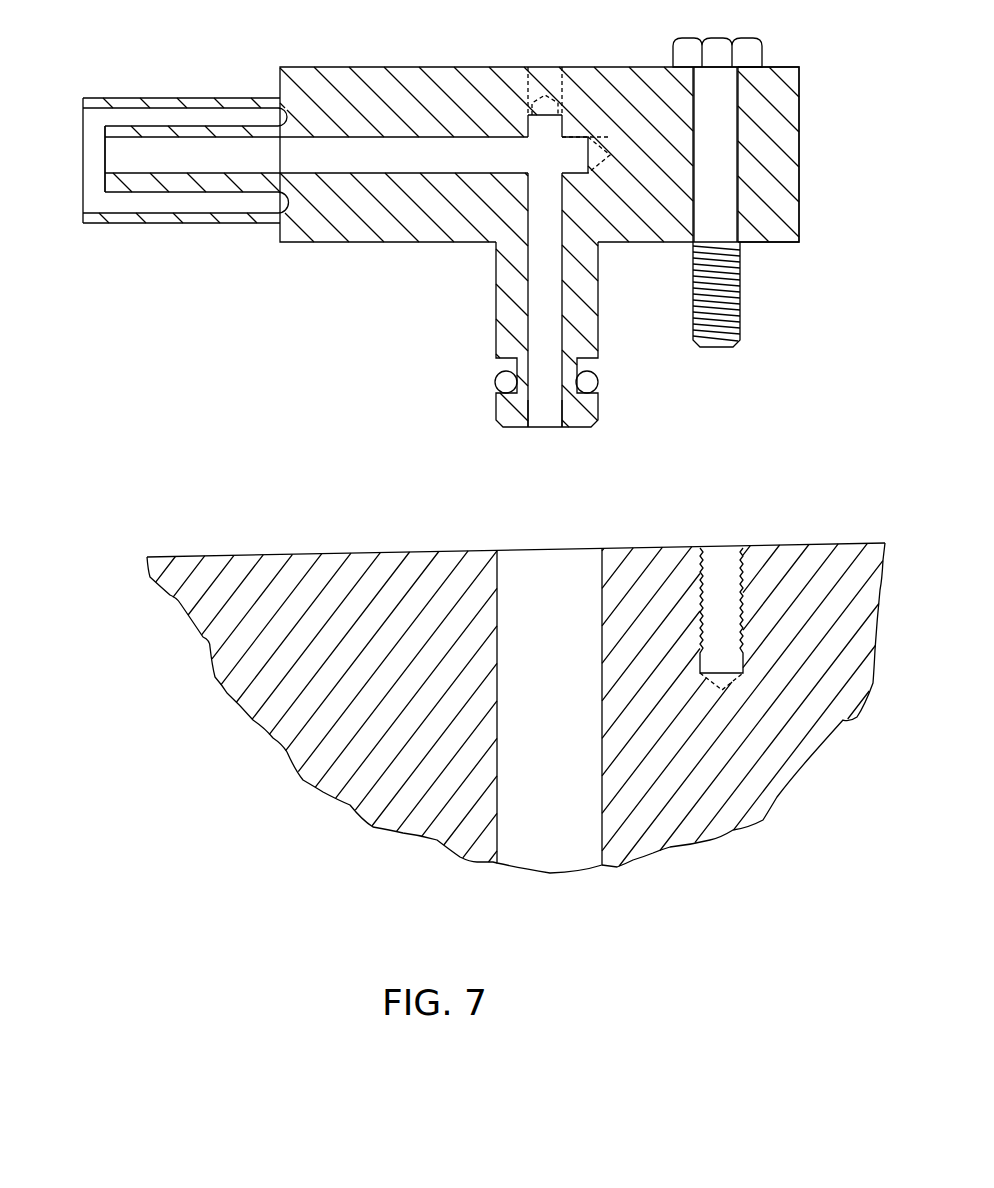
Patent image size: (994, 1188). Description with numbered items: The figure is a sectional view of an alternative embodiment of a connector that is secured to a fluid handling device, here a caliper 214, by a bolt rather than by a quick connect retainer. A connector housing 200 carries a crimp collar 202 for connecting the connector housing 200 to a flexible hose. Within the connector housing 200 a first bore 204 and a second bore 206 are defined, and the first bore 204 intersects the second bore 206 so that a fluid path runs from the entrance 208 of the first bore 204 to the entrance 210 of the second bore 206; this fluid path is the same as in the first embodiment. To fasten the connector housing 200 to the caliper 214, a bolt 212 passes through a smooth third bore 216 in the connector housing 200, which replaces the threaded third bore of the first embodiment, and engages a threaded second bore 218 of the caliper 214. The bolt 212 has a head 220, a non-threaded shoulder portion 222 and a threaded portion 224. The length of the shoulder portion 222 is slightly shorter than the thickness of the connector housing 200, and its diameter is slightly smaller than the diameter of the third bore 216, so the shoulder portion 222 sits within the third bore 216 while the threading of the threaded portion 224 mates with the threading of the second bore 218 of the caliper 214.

The connector housing 200 is at (325, 68).
The crimp collar 202 is at (148, 97).
The first bore 204 is at (197, 158).
The second bore 206 is at (545, 275).
The entrance of the first bore 208 is at (112, 160).
The entrance of the second bore 210 is at (545, 420).
The bolt 212 is at (722, 185).
The caliper 214 is at (292, 553).
The third bore 216 is at (742, 133).
The threaded second bore of the caliper 218 is at (742, 575).
The head 220 is at (730, 35).
The non-threaded shoulder portion 222 is at (720, 110).
The threaded portion 224 is at (722, 302).